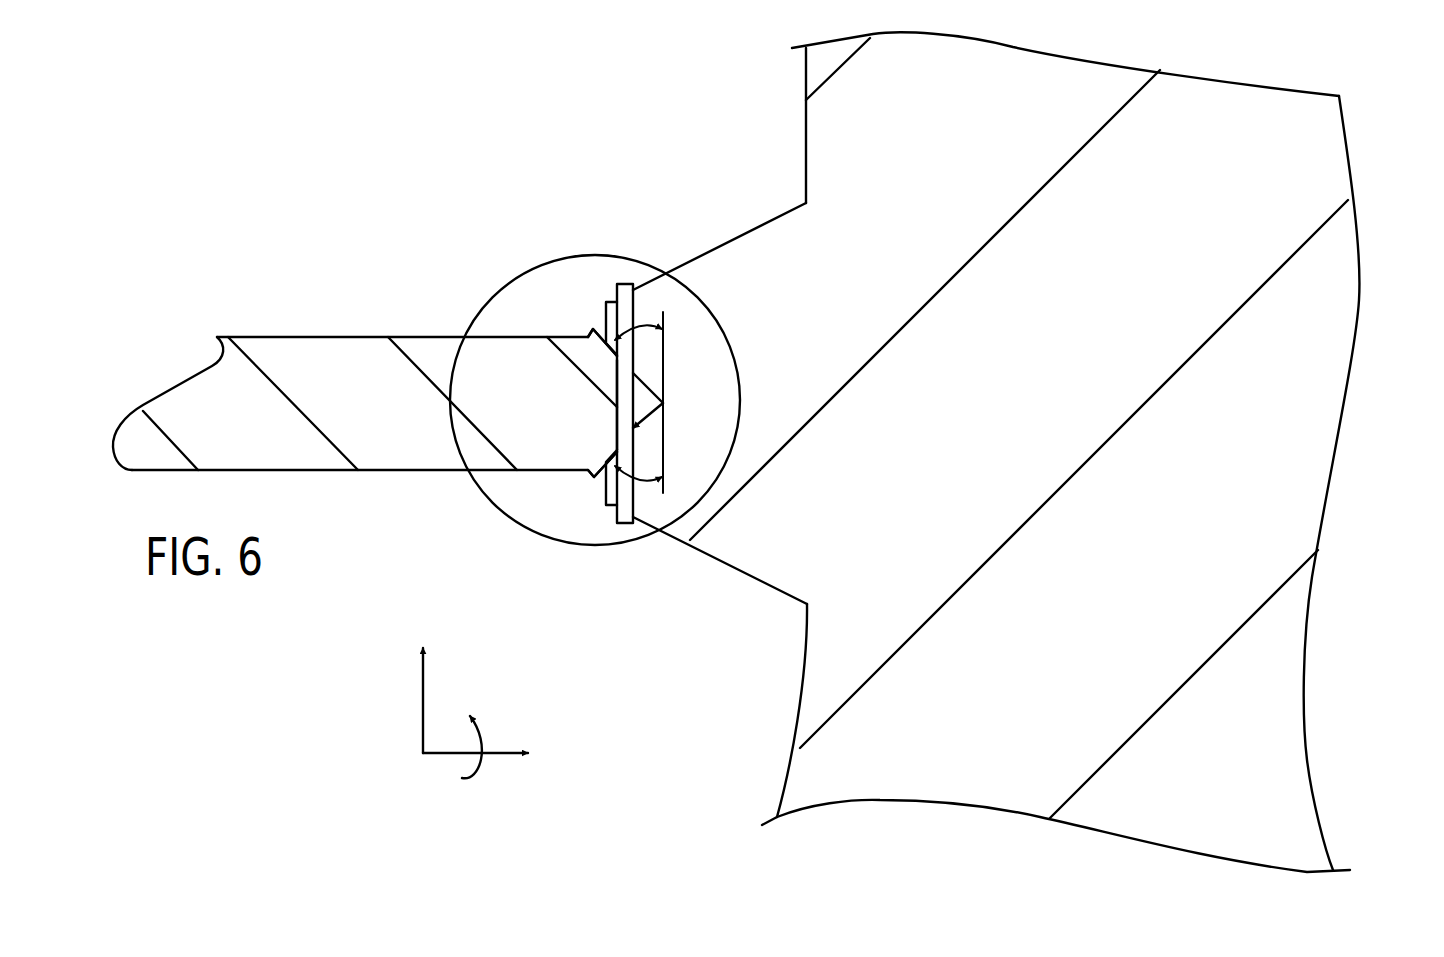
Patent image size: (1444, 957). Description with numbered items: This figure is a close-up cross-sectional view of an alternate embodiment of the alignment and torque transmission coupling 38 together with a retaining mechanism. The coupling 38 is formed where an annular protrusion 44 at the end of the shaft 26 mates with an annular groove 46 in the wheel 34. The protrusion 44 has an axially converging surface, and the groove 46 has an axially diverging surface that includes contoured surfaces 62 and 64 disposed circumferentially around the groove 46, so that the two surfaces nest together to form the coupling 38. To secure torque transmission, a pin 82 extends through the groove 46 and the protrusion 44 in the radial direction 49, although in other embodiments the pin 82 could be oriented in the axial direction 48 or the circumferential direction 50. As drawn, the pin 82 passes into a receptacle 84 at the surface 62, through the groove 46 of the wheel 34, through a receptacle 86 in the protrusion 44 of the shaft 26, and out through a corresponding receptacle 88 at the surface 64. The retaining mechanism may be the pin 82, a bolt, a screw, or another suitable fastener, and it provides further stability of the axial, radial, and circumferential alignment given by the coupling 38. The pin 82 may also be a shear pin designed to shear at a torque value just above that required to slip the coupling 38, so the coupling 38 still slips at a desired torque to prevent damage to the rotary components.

The shaft 26 is at (307, 337).
The wheel 34 is at (1328, 281).
The coupling 38 is at (592, 254).
The protrusion 44 is at (498, 337).
The groove 46 is at (655, 415).
The axial direction 48 is at (495, 752).
The radial direction 49 is at (425, 682).
The circumferential direction 50 is at (477, 740).
The surface 62 is at (760, 225).
The surface 64 is at (757, 582).
The pin 82 is at (624, 284).
The receptacle 84 is at (627, 312).
The receptacle 86 is at (622, 412).
The receptacle 88 is at (625, 495).